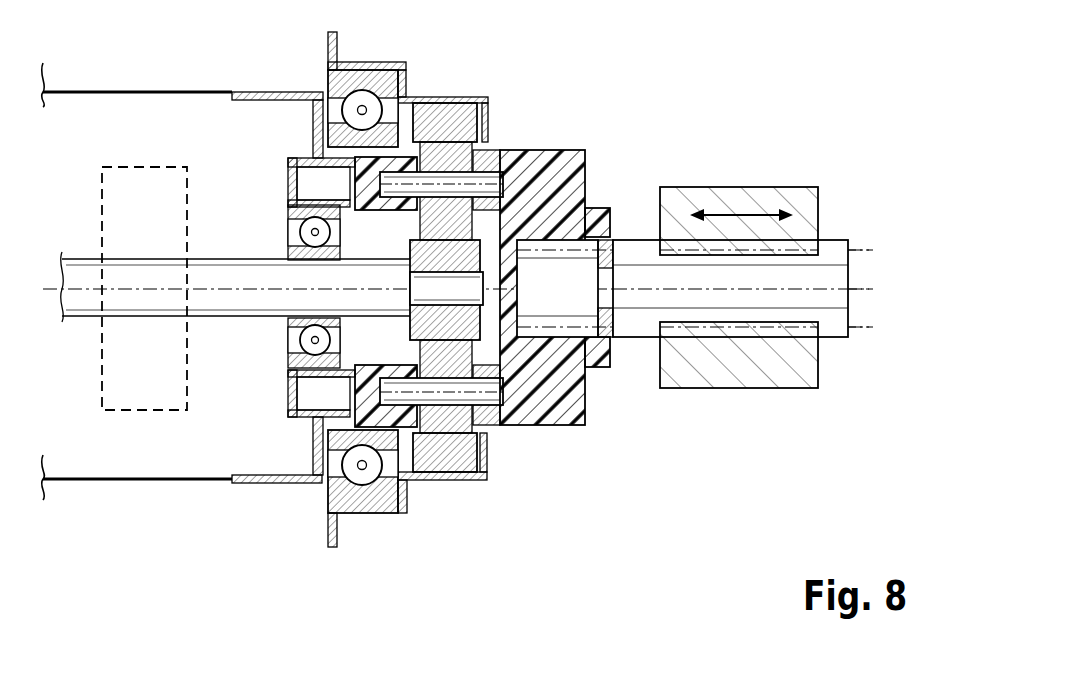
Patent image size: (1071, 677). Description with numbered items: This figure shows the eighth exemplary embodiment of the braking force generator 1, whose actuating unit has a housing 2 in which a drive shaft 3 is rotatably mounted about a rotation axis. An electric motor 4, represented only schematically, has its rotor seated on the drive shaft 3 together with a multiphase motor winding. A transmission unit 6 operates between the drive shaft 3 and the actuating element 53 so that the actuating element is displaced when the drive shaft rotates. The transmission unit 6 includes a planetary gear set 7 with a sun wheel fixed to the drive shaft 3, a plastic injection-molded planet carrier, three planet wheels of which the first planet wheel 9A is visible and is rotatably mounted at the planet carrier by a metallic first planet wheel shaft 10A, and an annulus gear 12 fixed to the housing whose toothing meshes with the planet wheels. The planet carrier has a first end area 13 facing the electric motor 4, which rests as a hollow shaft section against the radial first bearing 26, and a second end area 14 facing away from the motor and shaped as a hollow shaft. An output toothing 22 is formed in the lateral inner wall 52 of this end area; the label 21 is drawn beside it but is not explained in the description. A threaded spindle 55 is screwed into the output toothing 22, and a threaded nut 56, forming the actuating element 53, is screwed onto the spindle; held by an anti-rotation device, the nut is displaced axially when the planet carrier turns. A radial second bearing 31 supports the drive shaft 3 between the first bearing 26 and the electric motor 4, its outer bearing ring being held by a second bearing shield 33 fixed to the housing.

The braking force generator 1 is at (294, 518).
The housing 2 is at (158, 92).
The drive shaft 3 is at (212, 270).
The electric motor 4 is at (143, 412).
The transmission unit 6 is at (519, 468).
The planetary gear set 7 is at (460, 297).
The first planet wheel 9A is at (453, 155).
The first planet wheel shaft 10A is at (485, 180).
The annulus gear 12 is at (450, 117).
The first end area 13 is at (378, 232).
The second end area 14 is at (581, 449).
The coupling sleeve 21 is at (547, 268).
The lateral inner wall 52 is at (616, 325).
The output toothing 22 is at (565, 250).
The first bearing 26 is at (357, 502).
The second bearing 31 is at (285, 238).
The second bearing shield 33 is at (292, 182).
The actuating element 53 is at (745, 197).
The threaded nut 56 is at (739, 243).
The threaded spindle 55 is at (635, 243).